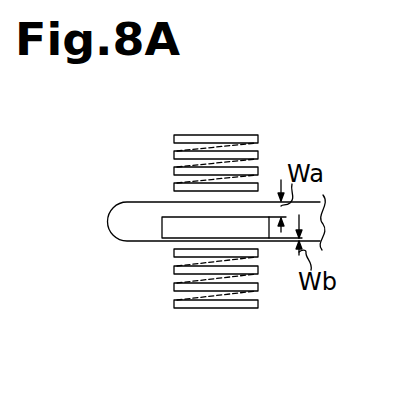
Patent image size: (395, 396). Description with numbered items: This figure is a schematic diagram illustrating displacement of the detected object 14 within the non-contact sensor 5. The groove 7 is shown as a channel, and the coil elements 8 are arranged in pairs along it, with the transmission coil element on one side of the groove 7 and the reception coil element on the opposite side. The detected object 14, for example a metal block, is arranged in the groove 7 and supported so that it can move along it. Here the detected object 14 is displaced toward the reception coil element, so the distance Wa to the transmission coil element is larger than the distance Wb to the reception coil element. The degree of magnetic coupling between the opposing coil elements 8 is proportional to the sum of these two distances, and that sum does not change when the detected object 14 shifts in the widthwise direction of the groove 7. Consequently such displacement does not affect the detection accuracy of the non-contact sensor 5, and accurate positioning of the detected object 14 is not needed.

The non-contact sensor 5 is at (153, 129).
The groove 7 is at (141, 201).
The coil elements 8 is at (186, 134).
The detected object 14 is at (161, 226).